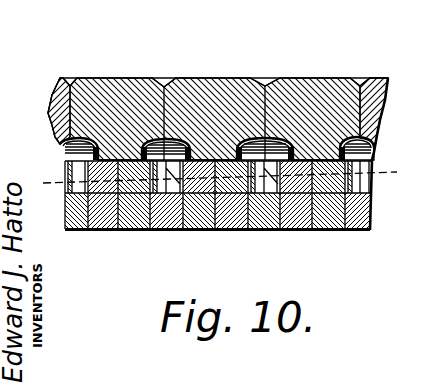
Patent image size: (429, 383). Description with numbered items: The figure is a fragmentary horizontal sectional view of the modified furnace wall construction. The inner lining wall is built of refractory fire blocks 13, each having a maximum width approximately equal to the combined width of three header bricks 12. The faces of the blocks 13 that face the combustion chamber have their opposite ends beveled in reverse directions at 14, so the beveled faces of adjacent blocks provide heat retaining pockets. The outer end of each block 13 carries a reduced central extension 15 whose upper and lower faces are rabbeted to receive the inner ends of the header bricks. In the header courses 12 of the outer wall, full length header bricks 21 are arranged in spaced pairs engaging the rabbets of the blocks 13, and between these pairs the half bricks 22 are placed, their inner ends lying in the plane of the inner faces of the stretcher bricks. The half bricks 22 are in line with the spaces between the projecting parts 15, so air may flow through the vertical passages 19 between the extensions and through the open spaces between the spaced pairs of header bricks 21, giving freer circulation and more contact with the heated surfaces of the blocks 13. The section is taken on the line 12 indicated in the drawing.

The header course brick 12 is at (16, 172).
The refractory lining block 13 is at (114, 90).
The beveled end face 14 is at (163, 80).
The reduced central extension 15 is at (388, 149).
The vertical passage 19 is at (176, 151).
The full length header course brick 21 is at (68, 168).
The half brick 22 is at (373, 243).